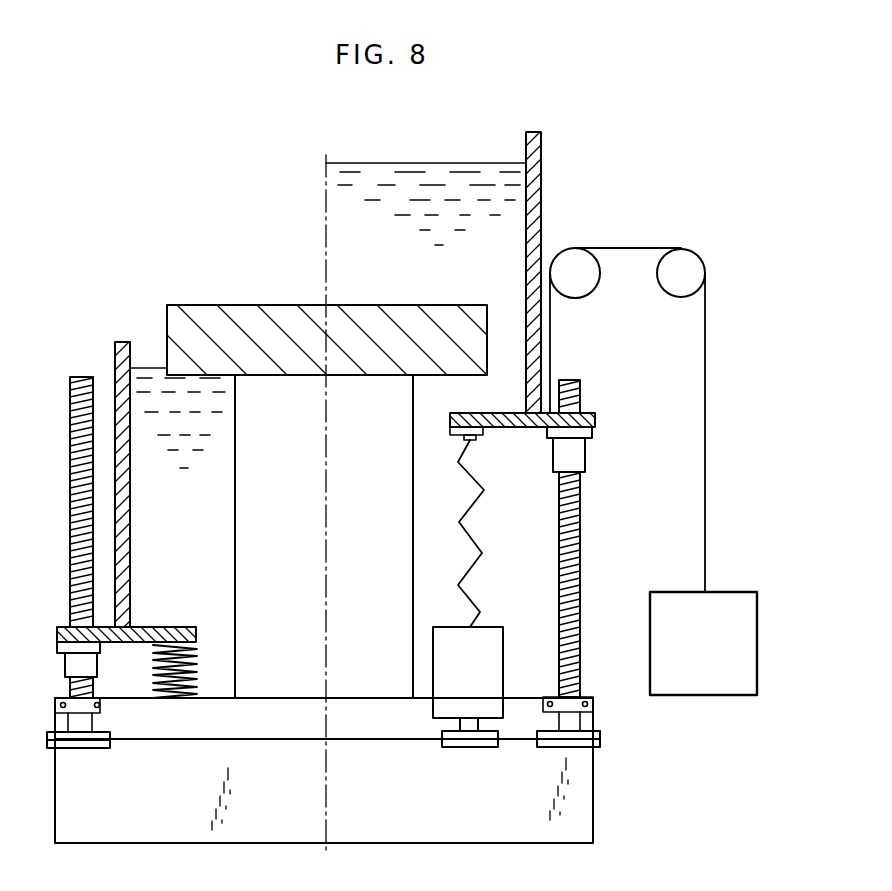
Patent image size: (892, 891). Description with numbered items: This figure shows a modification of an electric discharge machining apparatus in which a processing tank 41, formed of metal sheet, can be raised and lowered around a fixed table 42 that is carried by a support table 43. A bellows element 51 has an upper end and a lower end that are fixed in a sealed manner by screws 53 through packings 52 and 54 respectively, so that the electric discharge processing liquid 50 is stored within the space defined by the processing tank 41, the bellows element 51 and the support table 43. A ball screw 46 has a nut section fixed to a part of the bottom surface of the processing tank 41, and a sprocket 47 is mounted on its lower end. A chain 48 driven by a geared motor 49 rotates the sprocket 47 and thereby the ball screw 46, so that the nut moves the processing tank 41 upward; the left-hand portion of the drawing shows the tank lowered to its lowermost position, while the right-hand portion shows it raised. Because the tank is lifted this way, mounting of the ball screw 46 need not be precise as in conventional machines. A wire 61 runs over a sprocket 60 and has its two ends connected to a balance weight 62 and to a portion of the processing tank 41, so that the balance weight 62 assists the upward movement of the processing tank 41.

The processing tank 41 is at (118, 362).
The table 42 is at (423, 316).
The support table 43 is at (233, 560).
The ball screw 46 is at (70, 508).
The sprocket 47 is at (82, 748).
The chain 48 is at (527, 748).
The geared motor 49 is at (496, 682).
The processing liquid 50 is at (433, 168).
The bellows element 51 is at (472, 535).
The packing 52 is at (196, 632).
The screw 53 is at (468, 441).
The packing 54 is at (198, 695).
The sprocket 60 is at (678, 258).
The wire 61 is at (706, 452).
The balance weight 62 is at (724, 598).